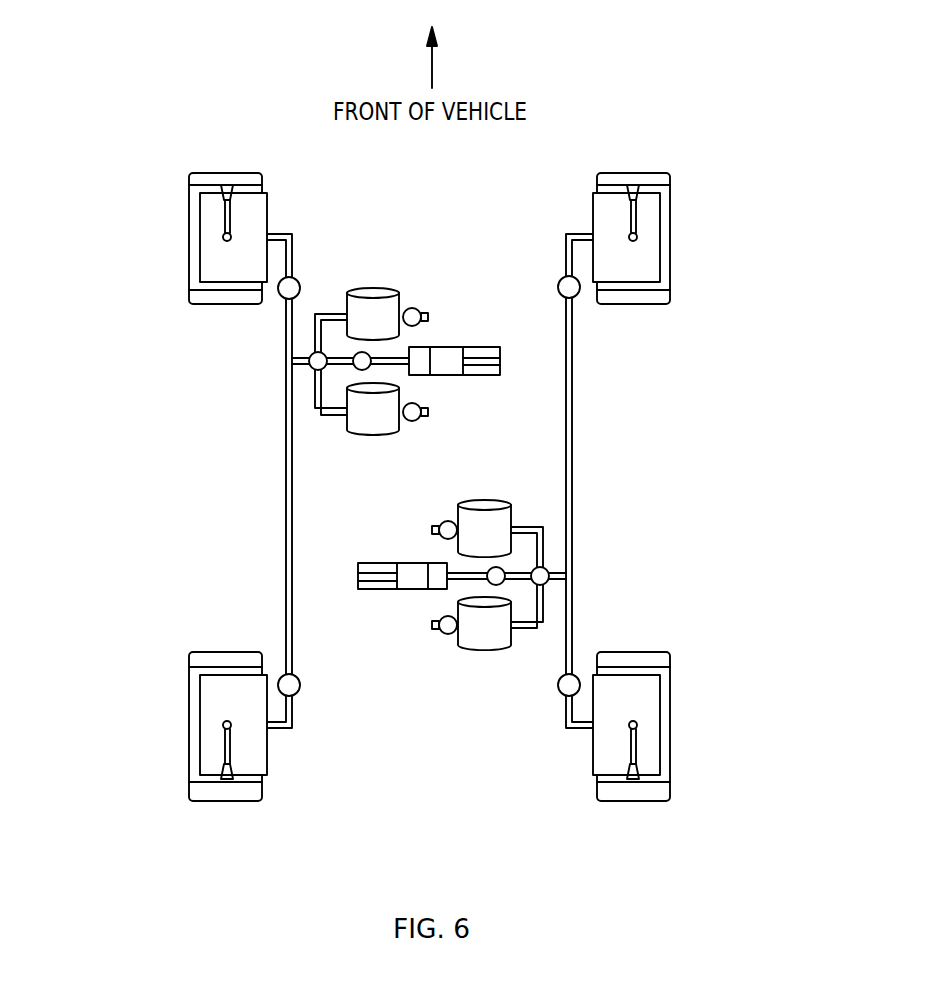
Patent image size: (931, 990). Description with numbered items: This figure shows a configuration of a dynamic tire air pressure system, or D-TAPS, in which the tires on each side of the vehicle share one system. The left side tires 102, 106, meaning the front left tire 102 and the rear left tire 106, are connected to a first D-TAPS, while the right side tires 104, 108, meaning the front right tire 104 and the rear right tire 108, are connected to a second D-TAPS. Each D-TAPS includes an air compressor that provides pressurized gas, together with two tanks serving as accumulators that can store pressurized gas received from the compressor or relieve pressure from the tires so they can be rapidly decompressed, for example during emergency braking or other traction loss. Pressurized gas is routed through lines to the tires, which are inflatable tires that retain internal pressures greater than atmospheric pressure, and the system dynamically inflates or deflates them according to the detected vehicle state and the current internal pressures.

The tire 102 is at (189, 237).
The tire 104 is at (670, 237).
The tire 106 is at (189, 729).
The tire 108 is at (670, 729).